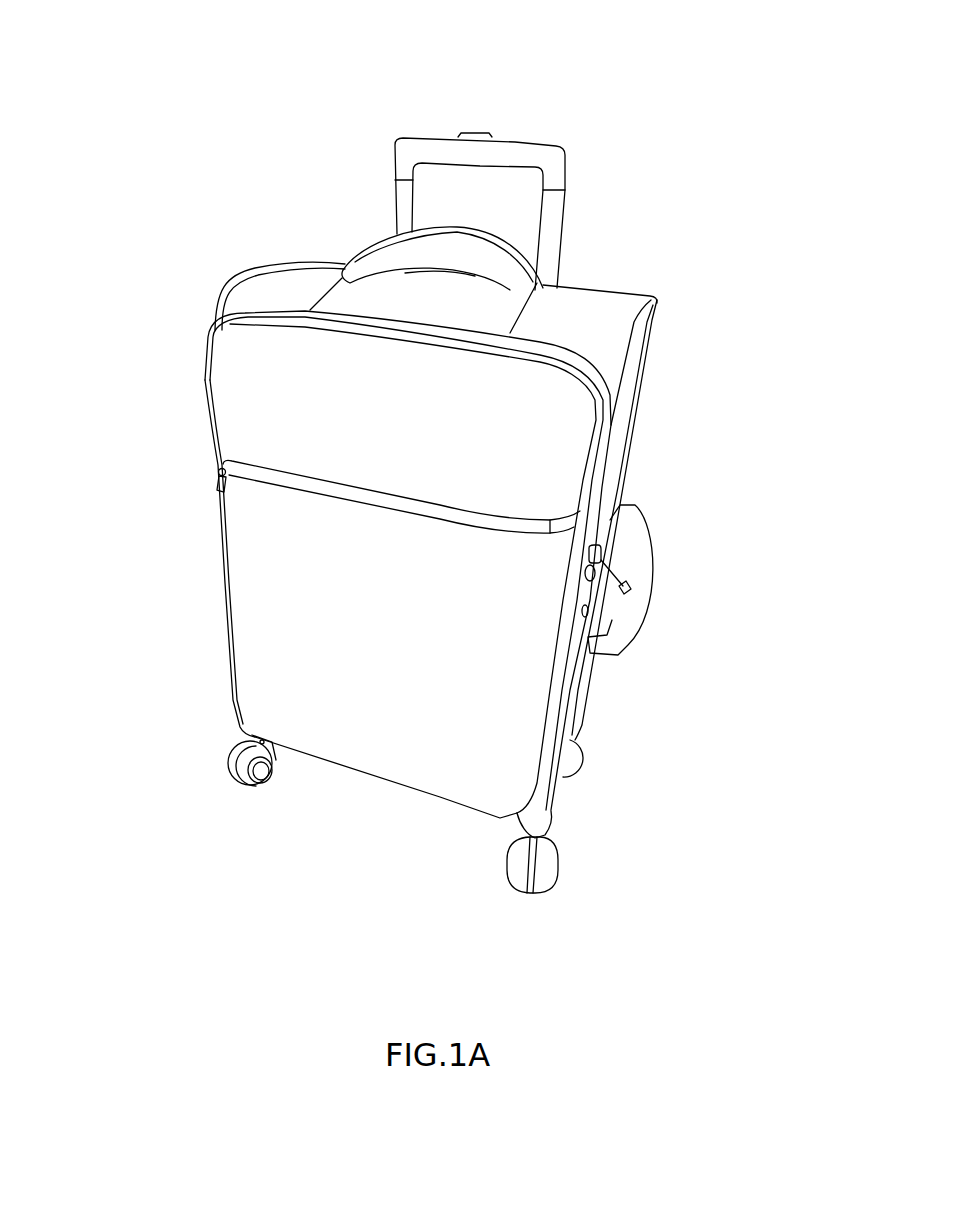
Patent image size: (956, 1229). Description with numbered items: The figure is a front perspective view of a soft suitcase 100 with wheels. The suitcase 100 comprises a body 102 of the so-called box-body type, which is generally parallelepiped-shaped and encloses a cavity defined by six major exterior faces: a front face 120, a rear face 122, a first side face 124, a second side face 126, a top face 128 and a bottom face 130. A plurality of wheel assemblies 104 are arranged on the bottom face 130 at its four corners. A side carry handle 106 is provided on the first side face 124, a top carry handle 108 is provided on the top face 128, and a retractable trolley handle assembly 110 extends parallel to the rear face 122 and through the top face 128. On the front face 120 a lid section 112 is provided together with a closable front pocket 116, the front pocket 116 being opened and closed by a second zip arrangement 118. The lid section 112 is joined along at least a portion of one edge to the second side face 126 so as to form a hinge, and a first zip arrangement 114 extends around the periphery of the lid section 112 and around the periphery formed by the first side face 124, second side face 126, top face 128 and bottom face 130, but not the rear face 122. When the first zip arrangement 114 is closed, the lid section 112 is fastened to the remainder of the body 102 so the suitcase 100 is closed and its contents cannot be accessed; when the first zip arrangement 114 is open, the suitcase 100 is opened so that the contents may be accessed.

The suitcase 100 is at (138, 227).
The body 102 is at (677, 449).
The wheel assemblies 104 is at (238, 772).
The side carry handle 106 is at (640, 557).
The top carry handle 108 is at (503, 278).
The retractable trolley handle assembly 110 is at (533, 150).
The lid section 112 is at (298, 617).
The first zip arrangement 114 is at (617, 575).
The front pocket 116 is at (240, 523).
The second zip arrangement 118 is at (222, 478).
The front face 120 is at (338, 715).
The rear face 122 is at (612, 703).
The first side face 124 is at (637, 363).
The second side face 126 is at (203, 664).
The top face 128 is at (620, 303).
The bottom face 130 is at (406, 815).